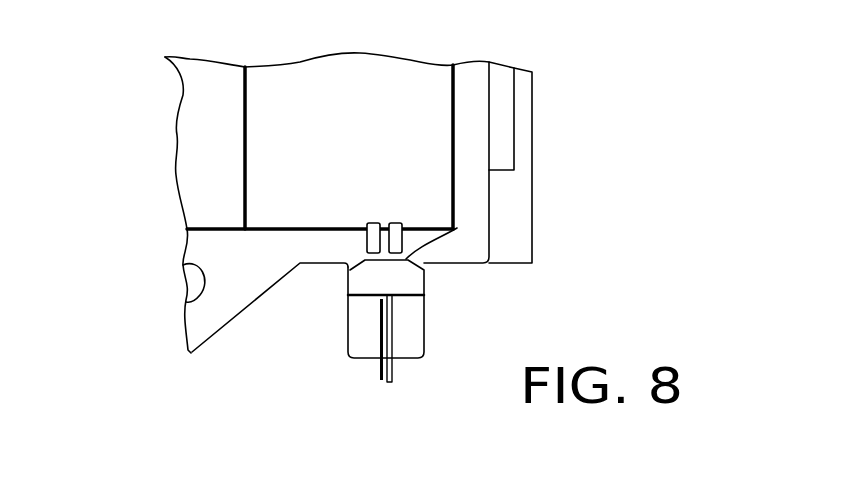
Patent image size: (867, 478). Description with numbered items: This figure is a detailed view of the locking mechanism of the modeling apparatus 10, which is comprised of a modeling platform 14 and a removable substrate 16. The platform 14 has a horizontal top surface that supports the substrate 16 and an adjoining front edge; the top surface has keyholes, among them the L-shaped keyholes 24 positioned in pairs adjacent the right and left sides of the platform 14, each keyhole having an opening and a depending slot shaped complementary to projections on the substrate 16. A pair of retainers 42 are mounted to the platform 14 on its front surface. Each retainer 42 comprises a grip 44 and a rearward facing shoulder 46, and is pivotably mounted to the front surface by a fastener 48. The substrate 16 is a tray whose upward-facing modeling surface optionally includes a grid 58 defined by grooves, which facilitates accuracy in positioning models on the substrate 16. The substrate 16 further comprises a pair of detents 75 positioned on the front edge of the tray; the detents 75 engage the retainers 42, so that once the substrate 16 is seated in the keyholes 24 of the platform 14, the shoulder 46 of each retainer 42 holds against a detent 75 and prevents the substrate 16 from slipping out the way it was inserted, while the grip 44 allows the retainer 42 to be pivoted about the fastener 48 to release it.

The modeling apparatus 10 is at (670, 219).
The modeling platform 14 is at (527, 157).
The removable substrate 16 is at (190, 130).
The L-shaped keyhole 24 is at (503, 117).
The retainer 42 is at (410, 345).
The grip 44 is at (382, 318).
The rearward facing shoulder 46 is at (457, 228).
The fastener 48 is at (386, 384).
The grid 58 is at (453, 170).
The detent 75 is at (352, 262).